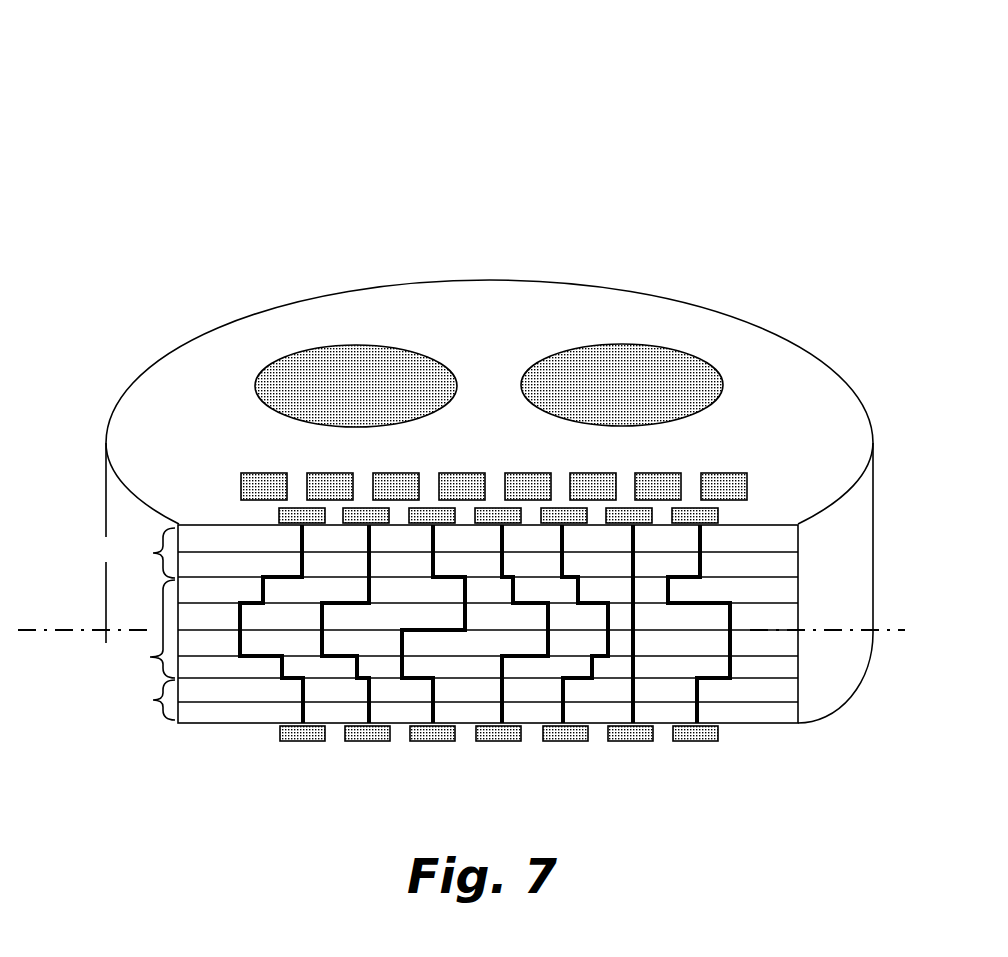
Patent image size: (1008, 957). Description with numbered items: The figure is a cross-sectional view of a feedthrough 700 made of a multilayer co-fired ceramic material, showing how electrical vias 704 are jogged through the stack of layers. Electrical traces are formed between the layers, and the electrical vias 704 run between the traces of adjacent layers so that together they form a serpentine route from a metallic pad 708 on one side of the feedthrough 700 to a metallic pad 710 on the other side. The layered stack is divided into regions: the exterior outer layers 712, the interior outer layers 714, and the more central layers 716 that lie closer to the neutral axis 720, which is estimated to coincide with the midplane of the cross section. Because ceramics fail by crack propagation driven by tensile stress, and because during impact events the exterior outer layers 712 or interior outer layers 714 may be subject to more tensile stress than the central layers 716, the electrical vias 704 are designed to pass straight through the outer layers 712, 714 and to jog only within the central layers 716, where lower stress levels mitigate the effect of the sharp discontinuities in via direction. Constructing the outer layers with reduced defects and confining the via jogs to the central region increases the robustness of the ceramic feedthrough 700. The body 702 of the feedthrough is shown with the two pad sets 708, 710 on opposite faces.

The feedthrough 700 is at (461, 413).
The housing body 702 is at (205, 433).
The electrical vias 704 is at (465, 651).
The metallic pad 708 is at (290, 740).
The metallic pad 710 is at (733, 478).
The exterior outer layers 712 is at (141, 700).
The interior outer layers 714 is at (137, 553).
The central layers 716 is at (132, 688).
The neutral axis 720 is at (78, 628).